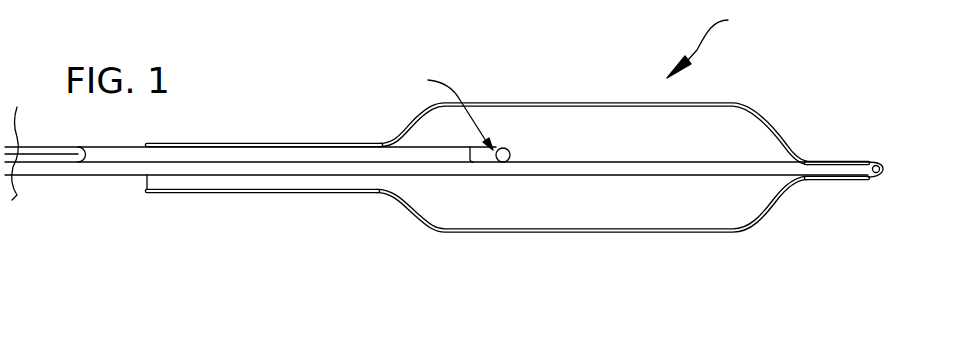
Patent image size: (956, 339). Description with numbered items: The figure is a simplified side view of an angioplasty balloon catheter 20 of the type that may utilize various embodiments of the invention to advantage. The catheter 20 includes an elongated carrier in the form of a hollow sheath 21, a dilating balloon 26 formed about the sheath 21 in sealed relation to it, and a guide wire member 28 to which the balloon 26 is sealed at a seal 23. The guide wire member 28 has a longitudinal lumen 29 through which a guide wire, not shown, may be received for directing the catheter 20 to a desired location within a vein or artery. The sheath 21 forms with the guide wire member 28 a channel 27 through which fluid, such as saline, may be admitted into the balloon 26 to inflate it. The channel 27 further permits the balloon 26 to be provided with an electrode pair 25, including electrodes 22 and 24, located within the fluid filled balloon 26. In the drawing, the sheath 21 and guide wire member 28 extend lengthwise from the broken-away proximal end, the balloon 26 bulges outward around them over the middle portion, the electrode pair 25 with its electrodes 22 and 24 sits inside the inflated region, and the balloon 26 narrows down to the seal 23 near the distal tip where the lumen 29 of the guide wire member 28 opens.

The angioplasty balloon catheter 20 is at (710, 42).
The hollow sheath 21 is at (210, 195).
The electrode 22 is at (509, 150).
The seal 23 is at (850, 162).
The electrode 24 is at (509, 158).
The electrode pair 25 is at (448, 108).
The dilating balloon 26 is at (760, 108).
The channel 27 is at (258, 183).
The guide wire member 28 is at (557, 175).
The longitudinal lumen 29 is at (867, 178).